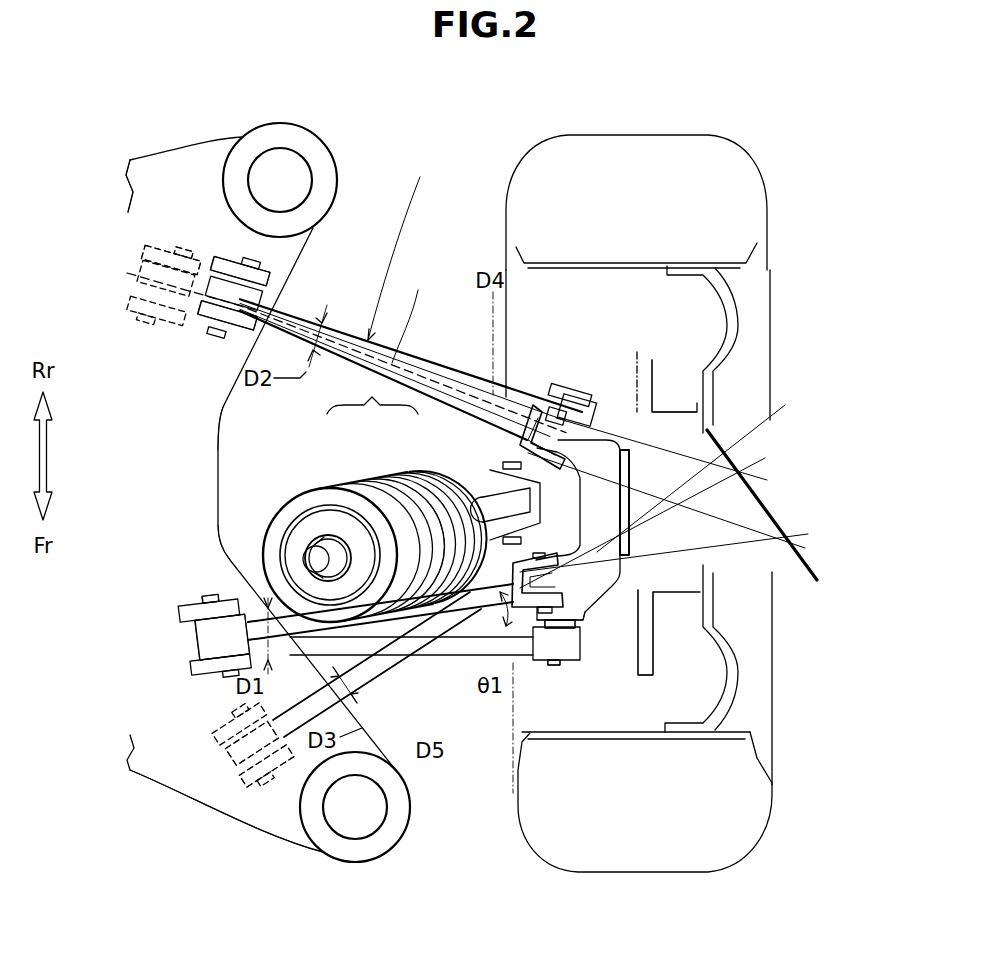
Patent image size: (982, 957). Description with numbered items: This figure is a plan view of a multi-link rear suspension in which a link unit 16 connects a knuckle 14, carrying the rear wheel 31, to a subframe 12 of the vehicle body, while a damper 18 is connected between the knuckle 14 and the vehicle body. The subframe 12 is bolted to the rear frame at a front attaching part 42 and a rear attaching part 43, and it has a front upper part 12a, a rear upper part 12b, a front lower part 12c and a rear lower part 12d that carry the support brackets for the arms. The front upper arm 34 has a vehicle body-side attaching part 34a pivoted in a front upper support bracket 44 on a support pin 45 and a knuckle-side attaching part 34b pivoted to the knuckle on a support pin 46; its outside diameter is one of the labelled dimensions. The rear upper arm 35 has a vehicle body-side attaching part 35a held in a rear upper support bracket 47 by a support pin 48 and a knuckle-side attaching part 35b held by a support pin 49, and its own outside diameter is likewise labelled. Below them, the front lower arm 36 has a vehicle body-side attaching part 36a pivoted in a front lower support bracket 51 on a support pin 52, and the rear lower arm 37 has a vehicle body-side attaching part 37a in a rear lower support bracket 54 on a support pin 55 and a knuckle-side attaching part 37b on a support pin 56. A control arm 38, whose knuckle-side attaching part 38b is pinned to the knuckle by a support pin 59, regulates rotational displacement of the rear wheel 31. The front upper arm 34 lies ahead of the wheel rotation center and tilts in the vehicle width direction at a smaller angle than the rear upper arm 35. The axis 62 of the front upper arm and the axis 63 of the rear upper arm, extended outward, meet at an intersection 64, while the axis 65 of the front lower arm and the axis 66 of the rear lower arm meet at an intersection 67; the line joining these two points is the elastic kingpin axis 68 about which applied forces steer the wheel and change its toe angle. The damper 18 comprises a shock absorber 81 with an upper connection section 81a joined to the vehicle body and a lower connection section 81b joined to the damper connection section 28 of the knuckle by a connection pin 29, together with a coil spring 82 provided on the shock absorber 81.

The subframe 12 is at (210, 157).
The front upper part 12a is at (200, 636).
The rear upper part 12b is at (193, 343).
The front lower part 12c is at (218, 780).
The rear lower part 12d is at (148, 230).
The knuckle 14 is at (625, 420).
The link unit 16 is at (400, 248).
The cushioning device (damper) 18 is at (414, 316).
The damper connection section 28 is at (514, 438).
The connection pin 29 is at (512, 578).
The rear wheel 31 is at (680, 135).
The front upper arm 34 is at (518, 630).
The vehicle body-side attaching part 34a is at (200, 647).
The knuckle-side attaching part 34b is at (520, 647).
The rear upper arm 35 is at (343, 357).
The vehicle body-side attaching part 35a is at (218, 267).
The knuckle-side attaching part 35b is at (584, 397).
The front lower arm 36 is at (357, 693).
The vehicle body-side attaching part 36a is at (218, 760).
The rear lower arm 37 is at (448, 354).
The vehicle body-side attaching part 37a is at (147, 273).
The knuckle-side attaching part 37b is at (630, 390).
The control arm 38 is at (475, 643).
The knuckle-side attaching part 38b is at (577, 657).
The front attaching part 42 is at (358, 862).
The rear attaching part 43 is at (300, 140).
The front upper support bracket 44 is at (187, 604).
The support pin 45 is at (217, 594).
The support pin 46 is at (570, 644).
The rear upper support bracket 47 is at (233, 345).
The support pin 48 is at (247, 273).
The support pin 49 is at (561, 408).
The front lower support bracket 51 is at (213, 730).
The support pin 52 is at (273, 780).
The rear lower support bracket 54 is at (137, 317).
The support pin 55 is at (178, 260).
The support pin 56 is at (571, 392).
The support pin 59 is at (557, 667).
The axis of the front upper arm 62 is at (697, 560).
The axis of the rear upper arm 63 is at (626, 443).
The intersection 64 is at (787, 534).
The axis of the front lower arm 65 is at (652, 525).
The axis of the rear lower arm 66 is at (741, 467).
The intersection 67 is at (742, 472).
The elastic kingpin axis 68 is at (760, 503).
The shock absorber 81 is at (441, 490).
The upper connection section 81a is at (314, 546).
The lower connection section 81b is at (502, 465).
The coil spring 82 is at (367, 480).